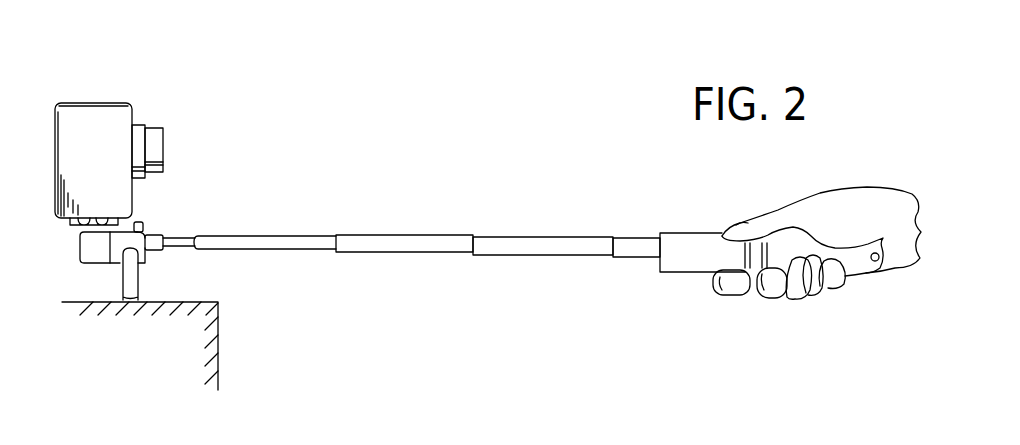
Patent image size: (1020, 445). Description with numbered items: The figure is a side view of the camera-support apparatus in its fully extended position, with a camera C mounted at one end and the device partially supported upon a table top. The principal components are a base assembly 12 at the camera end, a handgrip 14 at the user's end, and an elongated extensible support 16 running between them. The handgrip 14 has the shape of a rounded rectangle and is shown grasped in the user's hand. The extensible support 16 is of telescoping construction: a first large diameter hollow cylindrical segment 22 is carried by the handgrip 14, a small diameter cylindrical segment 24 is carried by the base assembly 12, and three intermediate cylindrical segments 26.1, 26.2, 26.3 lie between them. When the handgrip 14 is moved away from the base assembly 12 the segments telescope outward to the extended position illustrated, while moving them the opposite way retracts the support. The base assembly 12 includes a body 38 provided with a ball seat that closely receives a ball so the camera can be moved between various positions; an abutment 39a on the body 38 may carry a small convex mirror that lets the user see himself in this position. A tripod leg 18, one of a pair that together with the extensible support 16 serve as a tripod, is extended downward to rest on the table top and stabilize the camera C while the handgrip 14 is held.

The camera C is at (176, 126).
The base assembly 12 is at (133, 227).
The body 38 is at (98, 248).
The abutment 39a is at (140, 222).
The tripod leg 18 is at (139, 277).
The small diameter cylindrical segment 24 is at (176, 235).
The elongated extensible support 16 is at (402, 247).
The intermediate cylindrical segment 26.1 is at (260, 248).
The intermediate cylindrical segment 26.2 is at (366, 235).
The intermediate cylindrical segment 26.3 is at (552, 237).
The first large diameter hollow cylindrical segment 22 is at (637, 257).
The handgrip 14 is at (689, 222).